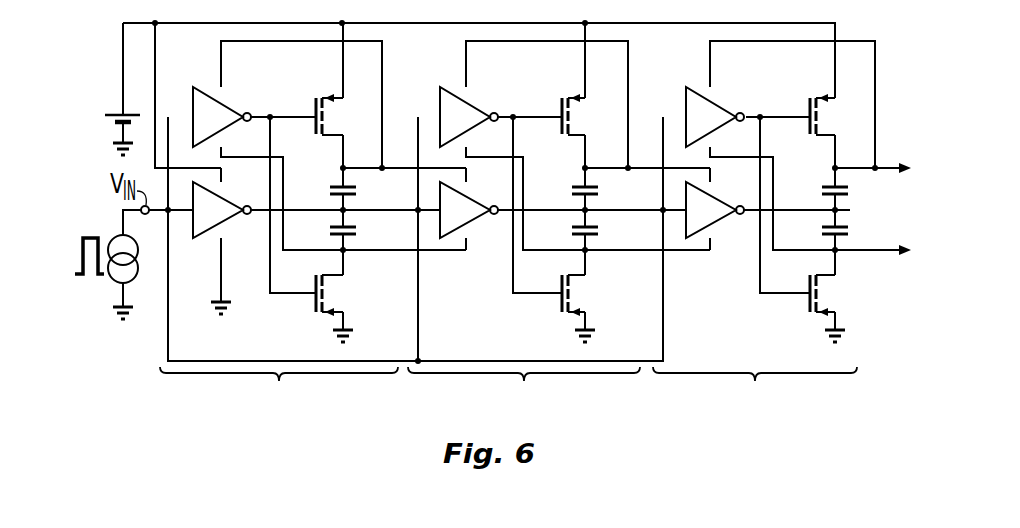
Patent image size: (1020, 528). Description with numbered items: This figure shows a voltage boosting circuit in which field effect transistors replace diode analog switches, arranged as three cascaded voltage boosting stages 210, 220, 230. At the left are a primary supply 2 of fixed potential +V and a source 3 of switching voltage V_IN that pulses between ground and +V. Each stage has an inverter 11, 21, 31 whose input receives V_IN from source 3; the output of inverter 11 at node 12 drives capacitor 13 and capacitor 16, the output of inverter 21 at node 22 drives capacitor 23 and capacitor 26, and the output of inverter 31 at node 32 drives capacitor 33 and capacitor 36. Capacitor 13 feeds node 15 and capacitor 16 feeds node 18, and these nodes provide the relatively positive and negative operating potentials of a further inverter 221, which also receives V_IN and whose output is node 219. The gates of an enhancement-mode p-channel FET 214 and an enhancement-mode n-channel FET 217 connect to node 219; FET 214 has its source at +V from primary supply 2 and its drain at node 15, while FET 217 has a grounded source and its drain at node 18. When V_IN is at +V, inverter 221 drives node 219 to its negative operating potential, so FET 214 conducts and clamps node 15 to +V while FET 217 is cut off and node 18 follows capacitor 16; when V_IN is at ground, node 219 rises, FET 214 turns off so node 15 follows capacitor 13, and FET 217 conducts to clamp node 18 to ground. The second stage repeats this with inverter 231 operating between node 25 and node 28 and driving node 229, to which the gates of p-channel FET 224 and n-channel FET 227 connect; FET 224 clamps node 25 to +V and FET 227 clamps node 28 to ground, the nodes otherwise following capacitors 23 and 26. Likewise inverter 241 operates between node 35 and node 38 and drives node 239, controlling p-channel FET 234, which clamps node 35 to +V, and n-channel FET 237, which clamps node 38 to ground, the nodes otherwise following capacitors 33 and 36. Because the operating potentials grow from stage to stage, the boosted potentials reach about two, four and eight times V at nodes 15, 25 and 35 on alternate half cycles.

The primary supply 2 is at (112, 119).
The source of switching voltage 3 is at (139, 268).
The inverter 11 is at (245, 176).
The output node of inverter 11 12 is at (346, 210).
The capacitor 13 is at (329, 190).
The node 15 is at (341, 170).
The capacitor 16 is at (329, 233).
The node 18 is at (346, 252).
The inverter 21 is at (484, 178).
The output node of inverter 21 22 is at (588, 211).
The capacitor 23 is at (571, 190).
The node 25 is at (583, 170).
The capacitor 26 is at (571, 233).
The node 28 is at (588, 252).
The inverter 31 is at (733, 178).
The output node of inverter 31 32 is at (838, 211).
The capacitor 33 is at (821, 190).
The node 35 is at (833, 170).
The capacitor 36 is at (821, 233).
The node 38 is at (838, 252).
The first stage 210 is at (279, 392).
The second stage 220 is at (524, 391).
The third stage 230 is at (755, 390).
The enhancement-mode p-channel FET 214 is at (367, 128).
The enhancement-mode n-channel FET 217 is at (362, 304).
The node 219 is at (276, 88).
The inverter 221 is at (196, 97).
The p-channel FET 224 is at (612, 128).
The n-channel FET 227 is at (610, 304).
The node 229 is at (519, 90).
The inverter 231 is at (442, 97).
The enhancement-mode p-channel FET 234 is at (863, 128).
The enhancement-mode n-channel FET 237 is at (860, 304).
The node 239 is at (760, 114).
The inverter 241 is at (688, 97).